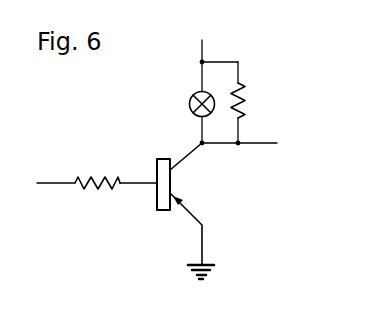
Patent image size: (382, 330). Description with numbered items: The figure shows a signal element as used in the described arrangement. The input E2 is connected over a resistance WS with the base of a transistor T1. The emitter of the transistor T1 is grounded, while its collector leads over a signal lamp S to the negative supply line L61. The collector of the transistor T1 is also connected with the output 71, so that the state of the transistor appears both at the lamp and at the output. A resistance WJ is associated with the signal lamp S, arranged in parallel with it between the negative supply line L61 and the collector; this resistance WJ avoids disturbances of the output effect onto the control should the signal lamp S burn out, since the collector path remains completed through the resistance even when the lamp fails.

The negative supply line L61 is at (203, 56).
The signal lamp S is at (190, 105).
The resistance WJ is at (244, 101).
The output 71 is at (254, 141).
The input E2 is at (38, 182).
The resistance WS is at (90, 176).
The transistor T1 is at (172, 183).